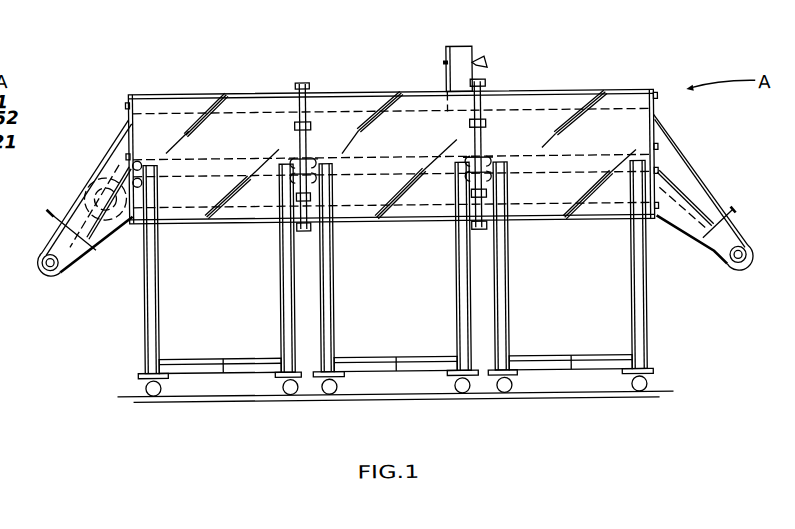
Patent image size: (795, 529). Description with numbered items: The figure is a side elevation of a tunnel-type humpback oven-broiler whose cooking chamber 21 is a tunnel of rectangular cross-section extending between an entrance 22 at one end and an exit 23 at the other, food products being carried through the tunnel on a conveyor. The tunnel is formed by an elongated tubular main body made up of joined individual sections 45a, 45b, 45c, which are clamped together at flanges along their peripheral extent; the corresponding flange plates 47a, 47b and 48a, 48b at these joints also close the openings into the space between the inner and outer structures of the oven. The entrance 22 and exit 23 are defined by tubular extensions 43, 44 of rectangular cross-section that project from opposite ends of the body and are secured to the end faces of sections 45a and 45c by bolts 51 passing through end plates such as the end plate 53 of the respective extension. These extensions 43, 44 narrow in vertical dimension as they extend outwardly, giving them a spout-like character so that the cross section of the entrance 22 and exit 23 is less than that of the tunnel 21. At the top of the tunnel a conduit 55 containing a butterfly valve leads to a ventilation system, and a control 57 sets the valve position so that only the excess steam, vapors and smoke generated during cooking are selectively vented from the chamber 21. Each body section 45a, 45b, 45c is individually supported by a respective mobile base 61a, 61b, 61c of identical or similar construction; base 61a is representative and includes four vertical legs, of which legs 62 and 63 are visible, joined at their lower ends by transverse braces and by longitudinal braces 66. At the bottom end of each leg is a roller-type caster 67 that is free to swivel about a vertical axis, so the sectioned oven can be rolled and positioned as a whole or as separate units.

The cooking chamber 21 is at (180, 120).
The entrance 22 is at (88, 247).
The exit 23 is at (699, 244).
The tubular extension 43 is at (100, 154).
The tubular extension 44 is at (690, 160).
The body section 45a is at (231, 84).
The body section 45b is at (356, 80).
The body section 45c is at (574, 80).
The flange plate 47a is at (300, 132).
The flange plate 47b is at (308, 128).
The flange plate 48a is at (476, 132).
The flange plate 48b is at (486, 129).
The bolt 51 is at (130, 104).
The end plate 53 is at (659, 109).
The conduit 55 is at (476, 47).
The control 57 is at (490, 61).
The mobile base 61a is at (211, 384).
The mobile base 61b is at (379, 387).
The mobile base 61c is at (556, 386).
The vertical leg 62 is at (144, 302).
The vertical leg 63 is at (280, 296).
The longitudinal brace 66 is at (215, 357).
The roller-type caster 67 is at (141, 384).